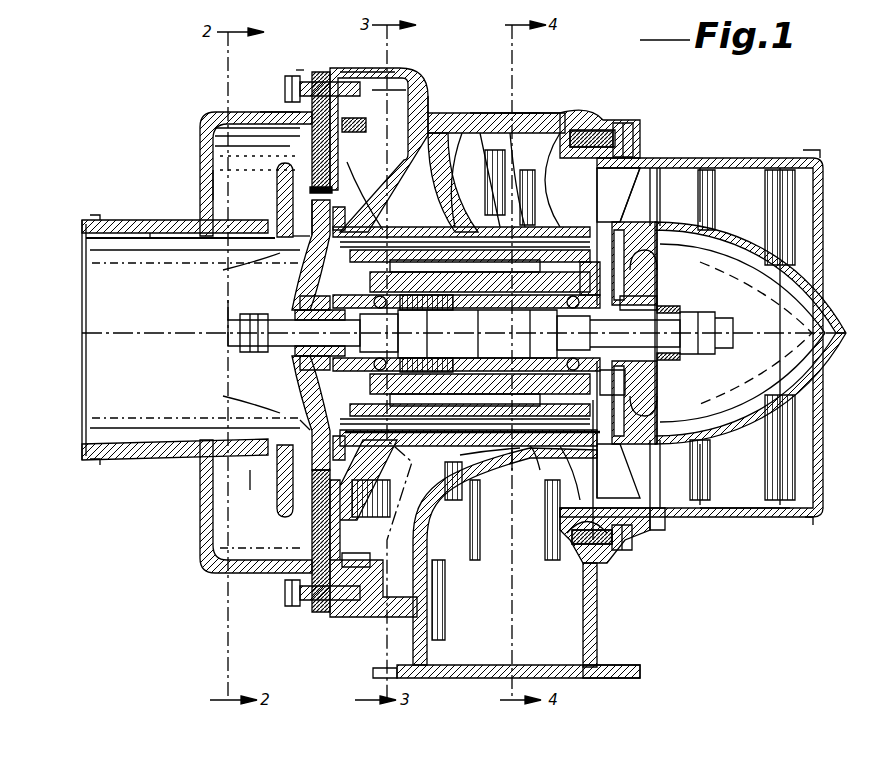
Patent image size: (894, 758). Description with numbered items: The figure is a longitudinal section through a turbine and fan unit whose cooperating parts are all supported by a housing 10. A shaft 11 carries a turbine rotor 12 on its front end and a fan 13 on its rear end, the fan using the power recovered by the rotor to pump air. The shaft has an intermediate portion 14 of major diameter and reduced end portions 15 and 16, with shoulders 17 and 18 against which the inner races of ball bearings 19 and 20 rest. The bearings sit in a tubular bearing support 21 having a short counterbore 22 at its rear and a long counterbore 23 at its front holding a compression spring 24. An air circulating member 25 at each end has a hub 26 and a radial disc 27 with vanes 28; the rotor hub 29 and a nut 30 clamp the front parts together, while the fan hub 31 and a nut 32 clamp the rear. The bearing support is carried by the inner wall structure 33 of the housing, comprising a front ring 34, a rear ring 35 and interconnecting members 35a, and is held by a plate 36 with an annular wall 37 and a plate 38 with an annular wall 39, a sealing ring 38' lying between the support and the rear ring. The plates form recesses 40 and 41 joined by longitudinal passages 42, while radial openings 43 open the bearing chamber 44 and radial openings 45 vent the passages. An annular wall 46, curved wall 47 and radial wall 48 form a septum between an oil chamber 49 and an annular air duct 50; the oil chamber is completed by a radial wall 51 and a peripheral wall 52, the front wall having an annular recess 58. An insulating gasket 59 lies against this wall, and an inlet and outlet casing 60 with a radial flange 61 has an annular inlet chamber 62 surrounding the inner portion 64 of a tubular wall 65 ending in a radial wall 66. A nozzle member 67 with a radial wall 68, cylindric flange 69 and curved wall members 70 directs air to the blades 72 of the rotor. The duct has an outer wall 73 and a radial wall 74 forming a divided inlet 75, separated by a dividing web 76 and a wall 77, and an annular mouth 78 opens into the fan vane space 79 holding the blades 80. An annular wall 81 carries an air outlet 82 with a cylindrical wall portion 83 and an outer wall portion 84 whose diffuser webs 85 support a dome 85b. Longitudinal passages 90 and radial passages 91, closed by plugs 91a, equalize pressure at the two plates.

The housing 10 is at (530, 133).
The shaft 11 is at (395, 478).
The turbine rotor 12 is at (277, 468).
The fan 13 is at (640, 222).
The intermediate portion 14 is at (477, 334).
The front end portion 15 is at (294, 333).
The rear end portion 16 is at (618, 333).
The shoulder 17 is at (400, 316).
The shoulder 18 is at (560, 310).
The ball bearing 19 is at (412, 372).
The ball bearing 20 is at (600, 400).
The bearing support 21 is at (540, 227).
The short counterbore 22 is at (630, 200).
The long counterbore 23 is at (462, 470).
The compression spring 24 is at (525, 470).
The air circulating member 25 is at (405, 446).
The hub 26 is at (364, 333).
The radial disc 27 is at (300, 380).
The vanes 28 is at (612, 252).
The rotor hub 29 is at (228, 372).
The nut 30 is at (240, 338).
The fan hub 31 is at (685, 312).
The nut 32 is at (732, 338).
The inner wall structure 33 is at (485, 462).
The front ring 34 is at (370, 245).
The rear ring 35 is at (645, 168).
The interconnecting members 35a is at (530, 460).
The plate 36 is at (298, 425).
The annular wall 37 is at (295, 372).
The plate 38 is at (658, 264).
The sealing ring 38' is at (655, 419).
The annular wall 39 is at (625, 380).
The recess 40 is at (228, 306).
The recess 41 is at (650, 300).
The longitudinal passages 42 is at (470, 225).
The radial openings 43 is at (528, 227).
The bearing chamber 44 is at (566, 450).
The radial openings 45 is at (450, 225).
The annular wall 46 is at (515, 227).
The curved wall 47 is at (470, 498).
The radial wall 48 is at (428, 105).
The oil chamber 49 is at (430, 560).
The annular air duct 50 is at (600, 555).
The radial wall 51 is at (354, 133).
The peripheral wall 52 is at (365, 68).
The annular recess 58 is at (365, 183).
The insulating gasket 59 is at (300, 72).
The air turbine inlet and outlet casing 60 is at (202, 120).
The radial flange 61 is at (300, 76).
The annular inlet chamber 62 is at (205, 495).
The inner portion 64 is at (200, 285).
The tubular wall 65 is at (182, 245).
The radial wall 66 is at (213, 180).
The nozzle member 67 is at (272, 112).
The radial wall 68 is at (292, 585).
The cylindric flange 69 is at (396, 155).
The curved wall members 70 is at (290, 560).
The turbine blades 72 is at (277, 430).
The outer wall 73 is at (550, 113).
The radially disposed wall 74 is at (597, 630).
The divided inlet 75 is at (575, 680).
The dividing web 76 is at (460, 668).
The wall 77 is at (585, 118).
The annular mouth 78 is at (655, 528).
The fan vane space 79 is at (665, 168).
The fan blades 80 is at (760, 180).
The annular wall 81 is at (600, 562).
The air outlet 82 is at (785, 158).
The cylindrical wall portion 83 is at (640, 520).
The outer cylindric wall portion 84 is at (783, 523).
The diffuser webs 85 is at (790, 440).
The dome 85b is at (800, 250).
The longitudinal passages 90 is at (610, 450).
The radial passages 91 is at (300, 392).
The plugs 91a is at (294, 238).